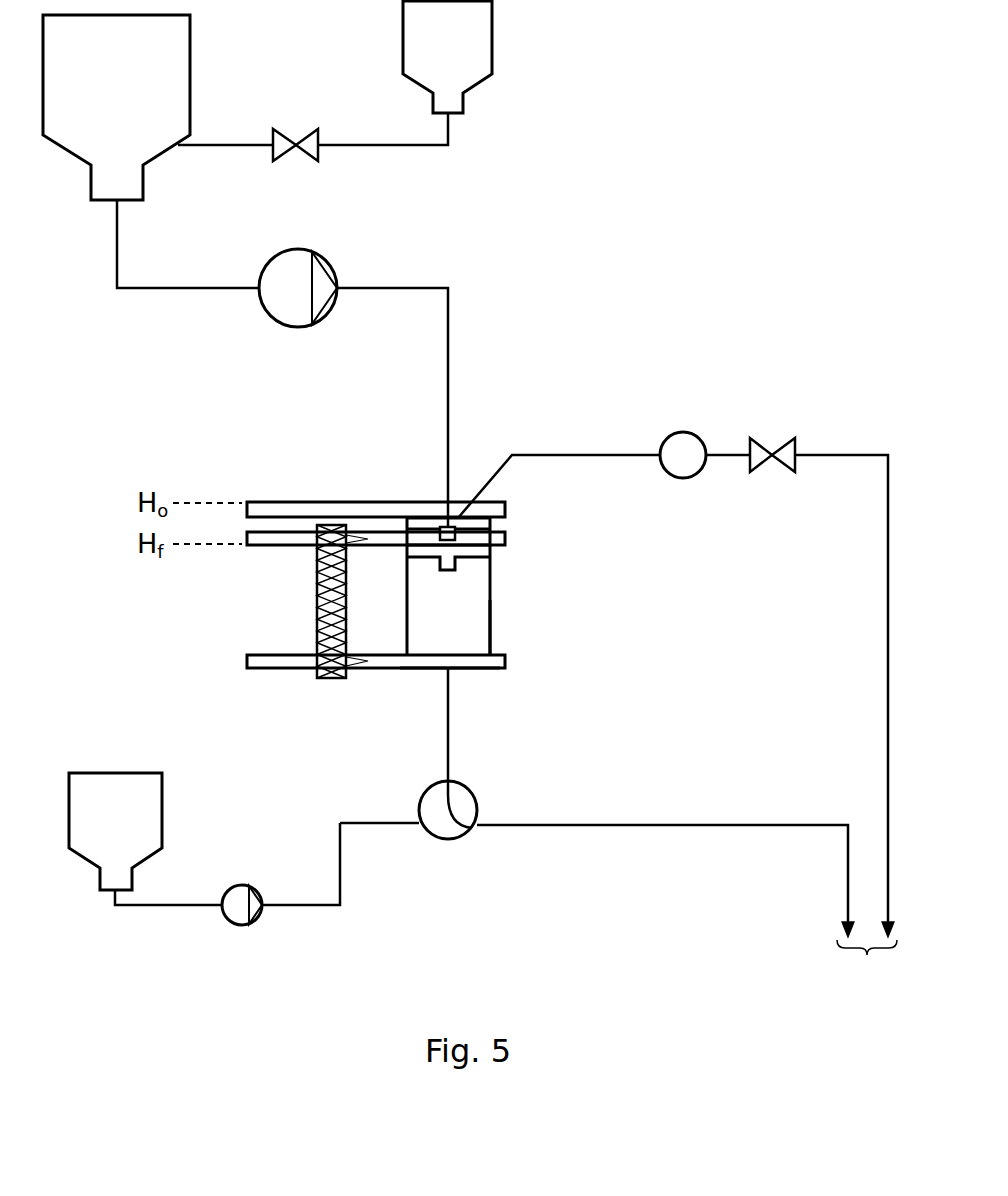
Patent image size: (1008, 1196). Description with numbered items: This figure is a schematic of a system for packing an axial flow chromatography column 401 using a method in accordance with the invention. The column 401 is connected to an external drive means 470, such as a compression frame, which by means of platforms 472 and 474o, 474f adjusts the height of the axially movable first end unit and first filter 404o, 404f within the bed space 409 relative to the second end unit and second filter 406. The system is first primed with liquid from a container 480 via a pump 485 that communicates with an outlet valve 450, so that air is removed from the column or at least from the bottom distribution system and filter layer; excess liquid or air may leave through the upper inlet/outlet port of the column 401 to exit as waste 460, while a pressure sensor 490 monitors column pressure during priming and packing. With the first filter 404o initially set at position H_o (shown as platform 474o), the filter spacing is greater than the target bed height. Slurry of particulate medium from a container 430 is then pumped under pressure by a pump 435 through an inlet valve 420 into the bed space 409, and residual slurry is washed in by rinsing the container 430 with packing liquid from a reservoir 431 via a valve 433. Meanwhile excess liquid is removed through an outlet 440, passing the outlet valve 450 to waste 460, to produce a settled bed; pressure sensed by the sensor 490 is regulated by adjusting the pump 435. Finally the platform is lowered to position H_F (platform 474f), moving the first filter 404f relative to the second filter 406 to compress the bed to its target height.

The column 401 is at (417, 559).
The first filter in initial position 404o is at (477, 525).
The first filter in final position 404f is at (498, 548).
The second filter 406 is at (475, 653).
The bed space 409 is at (473, 592).
The inlet valve 420 is at (449, 527).
The container 430 is at (190, 90).
The reservoir 431 is at (492, 52).
The valve 433 is at (300, 135).
The pump 435 is at (265, 268).
The outlet 440 is at (432, 672).
The outlet valve 450 is at (475, 793).
The waste 460 is at (867, 952).
The external drive means 470 is at (315, 612).
The platform 472 is at (265, 670).
The platform in initial position 474o is at (303, 505).
The platform in final position 474f is at (262, 548).
The container 480 is at (120, 773).
The pump 485 is at (237, 885).
The pressure sensor 490 is at (677, 432).